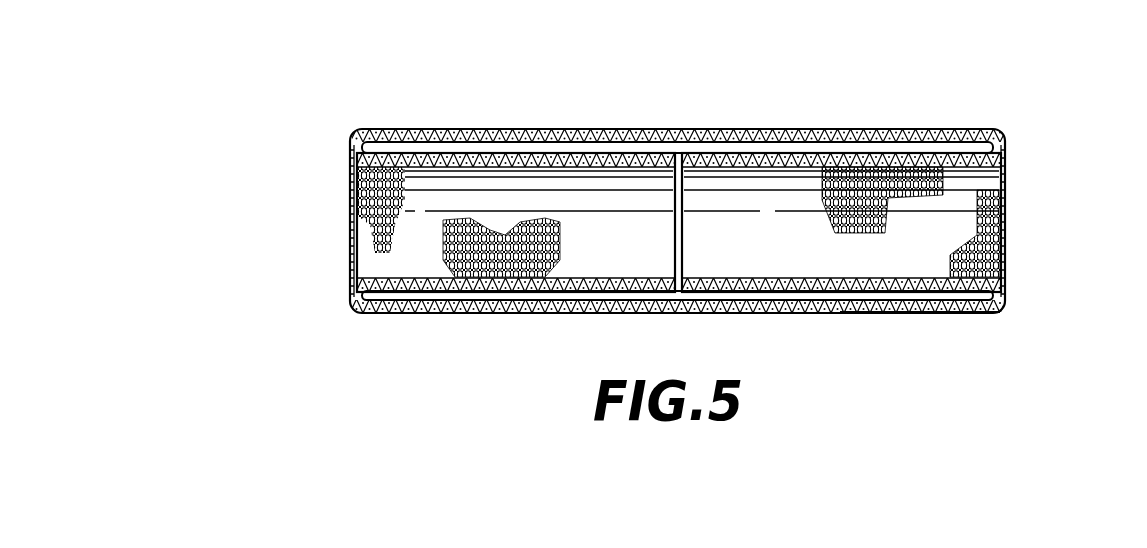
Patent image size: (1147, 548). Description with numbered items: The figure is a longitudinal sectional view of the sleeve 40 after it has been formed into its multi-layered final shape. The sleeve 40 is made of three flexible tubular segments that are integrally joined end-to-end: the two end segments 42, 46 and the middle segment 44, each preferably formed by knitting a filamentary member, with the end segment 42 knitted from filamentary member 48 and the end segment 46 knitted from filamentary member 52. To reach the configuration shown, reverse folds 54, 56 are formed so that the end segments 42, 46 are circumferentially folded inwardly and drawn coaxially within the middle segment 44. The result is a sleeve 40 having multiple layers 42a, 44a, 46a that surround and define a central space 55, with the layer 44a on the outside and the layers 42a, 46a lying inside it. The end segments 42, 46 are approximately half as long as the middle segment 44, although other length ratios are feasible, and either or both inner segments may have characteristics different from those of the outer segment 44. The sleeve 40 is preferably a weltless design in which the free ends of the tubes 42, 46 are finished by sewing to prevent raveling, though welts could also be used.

The sleeve 40 is at (946, 101).
The tubular segment 42 is at (806, 155).
The layer 42a is at (882, 290).
The middle segment 44 is at (594, 130).
The layer 44a is at (933, 314).
The tubular segment 46 is at (452, 155).
The layer 46a is at (492, 290).
The filamentary member 48 is at (828, 225).
The filamentary member 52 is at (560, 236).
The reverse fold 54 is at (1004, 299).
The central space 55 is at (950, 232).
The reverse fold 56 is at (350, 293).